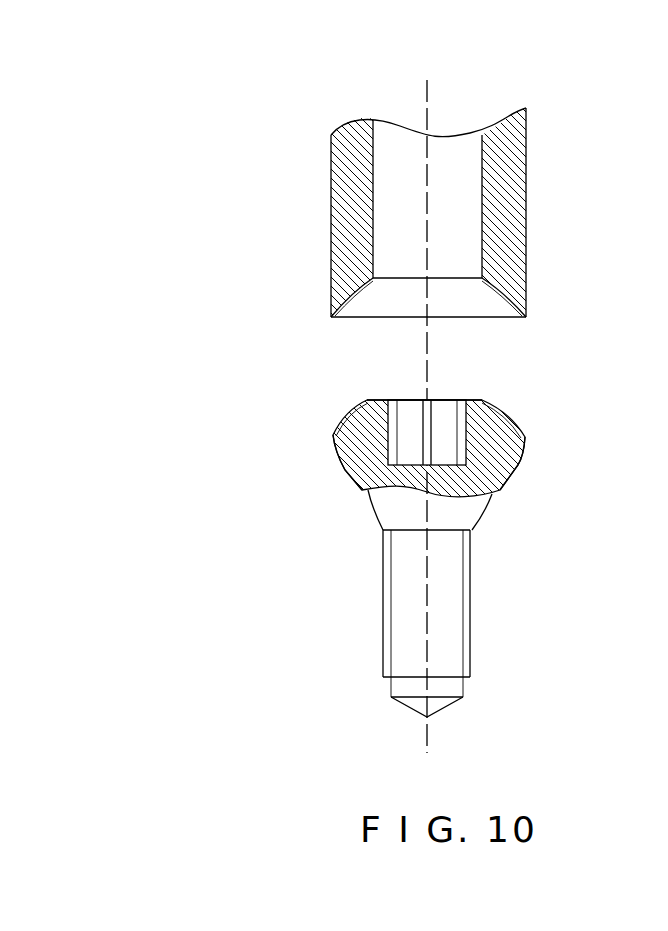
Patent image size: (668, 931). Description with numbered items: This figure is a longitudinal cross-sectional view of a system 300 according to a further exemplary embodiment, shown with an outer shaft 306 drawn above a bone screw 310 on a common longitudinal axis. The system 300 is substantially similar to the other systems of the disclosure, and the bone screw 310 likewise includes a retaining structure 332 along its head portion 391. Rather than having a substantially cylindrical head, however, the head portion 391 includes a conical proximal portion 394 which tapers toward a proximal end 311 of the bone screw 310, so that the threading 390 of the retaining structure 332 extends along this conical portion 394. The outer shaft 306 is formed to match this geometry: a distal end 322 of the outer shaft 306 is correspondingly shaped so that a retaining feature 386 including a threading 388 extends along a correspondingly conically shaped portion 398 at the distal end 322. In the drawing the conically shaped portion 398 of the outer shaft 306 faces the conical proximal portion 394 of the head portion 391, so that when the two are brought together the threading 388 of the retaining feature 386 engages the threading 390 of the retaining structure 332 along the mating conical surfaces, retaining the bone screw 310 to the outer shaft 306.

The system 300 is at (258, 138).
The outer shaft 306 is at (548, 192).
The bone screw 310 is at (355, 632).
The proximal end 311 is at (482, 400).
The distal end 322 is at (331, 290).
The retaining structure 332 is at (335, 418).
The retaining feature 386 is at (524, 298).
The threading 388 is at (333, 297).
The threading 390 is at (370, 400).
The head portion 391 is at (508, 458).
The conical proximal portion 394 is at (508, 410).
The conically shaped portion 398 is at (487, 290).